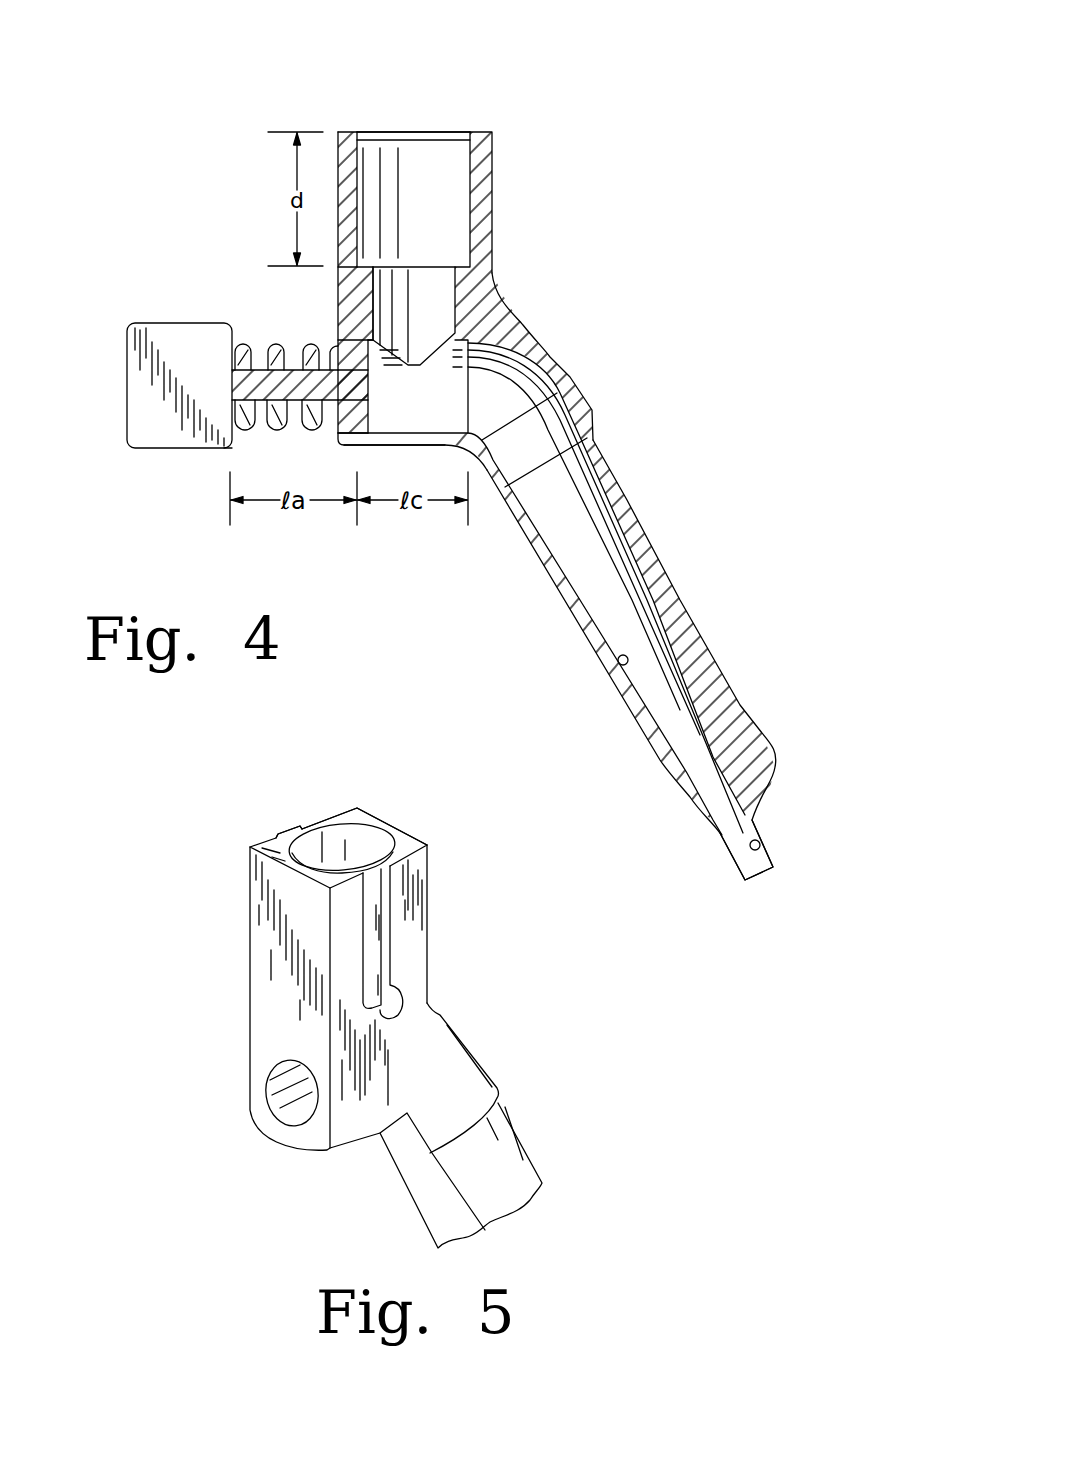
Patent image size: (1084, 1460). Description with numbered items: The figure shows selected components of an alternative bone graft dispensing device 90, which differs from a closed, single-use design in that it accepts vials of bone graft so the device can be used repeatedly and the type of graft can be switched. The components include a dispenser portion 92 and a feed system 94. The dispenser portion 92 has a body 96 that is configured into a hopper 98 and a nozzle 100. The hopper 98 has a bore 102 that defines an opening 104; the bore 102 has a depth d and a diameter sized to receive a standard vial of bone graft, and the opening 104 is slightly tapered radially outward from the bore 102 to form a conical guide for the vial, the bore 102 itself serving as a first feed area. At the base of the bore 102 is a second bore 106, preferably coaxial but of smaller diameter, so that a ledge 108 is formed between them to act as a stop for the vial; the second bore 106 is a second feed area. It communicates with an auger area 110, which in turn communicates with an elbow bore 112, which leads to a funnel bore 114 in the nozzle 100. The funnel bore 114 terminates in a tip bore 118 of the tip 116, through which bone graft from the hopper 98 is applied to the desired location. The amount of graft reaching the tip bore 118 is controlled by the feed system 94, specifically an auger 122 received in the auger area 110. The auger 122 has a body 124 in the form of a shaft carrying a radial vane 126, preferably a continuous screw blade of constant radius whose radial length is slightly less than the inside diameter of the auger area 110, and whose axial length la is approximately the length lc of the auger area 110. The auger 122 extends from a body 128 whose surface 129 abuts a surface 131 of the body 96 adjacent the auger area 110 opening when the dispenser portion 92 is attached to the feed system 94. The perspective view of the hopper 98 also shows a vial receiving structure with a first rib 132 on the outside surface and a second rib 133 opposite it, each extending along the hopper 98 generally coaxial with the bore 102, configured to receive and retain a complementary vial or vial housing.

In FIG. 4, the bone graft dispensing device 90 is at (586, 94).
In FIG. 4, the dispenser portion 92 is at (472, 540).
In FIG. 4, the feed system 94 is at (236, 240).
In FIG. 4, the body 96 is at (523, 325).
In FIG. 4, the hopper 98 is at (492, 152).
In FIG. 5, the hopper 98 is at (427, 933).
In FIG. 4, the nozzle 100 is at (713, 650).
In FIG. 5, the nozzle 100 is at (520, 1197).
In FIG. 4, the bore 102 is at (468, 180).
In FIG. 5, the bore 102 is at (364, 834).
In FIG. 4, the opening 104 is at (430, 131).
In FIG. 5, the opening 104 is at (341, 840).
In FIG. 4, the second bore 106 is at (458, 289).
In FIG. 4, the ledge 108 is at (338, 285).
In FIG. 4, the auger area 110 is at (389, 422).
In FIG. 5, the auger area 110 is at (296, 1110).
In FIG. 4, the elbow bore 112 is at (535, 366).
In FIG. 5, the elbow bore 112 is at (493, 1070).
In FIG. 4, the funnel bore 114 is at (617, 664).
In FIG. 4, the tip 116 is at (727, 853).
In FIG. 4, the tip bore 118 is at (762, 849).
In FIG. 4, the auger 122 is at (207, 354).
In FIG. 4, the body 124 is at (253, 337).
In FIG. 4, the radial vane 126 is at (320, 338).
In FIG. 4, the body 128 is at (135, 396).
In FIG. 4, the surface 129 is at (240, 440).
In FIG. 4, the surface 131 is at (337, 433).
In FIG. 5, the surface 131 is at (252, 952).
In FIG. 5, the first rib 132 is at (378, 960).
In FIG. 5, the second rib 133 is at (278, 826).